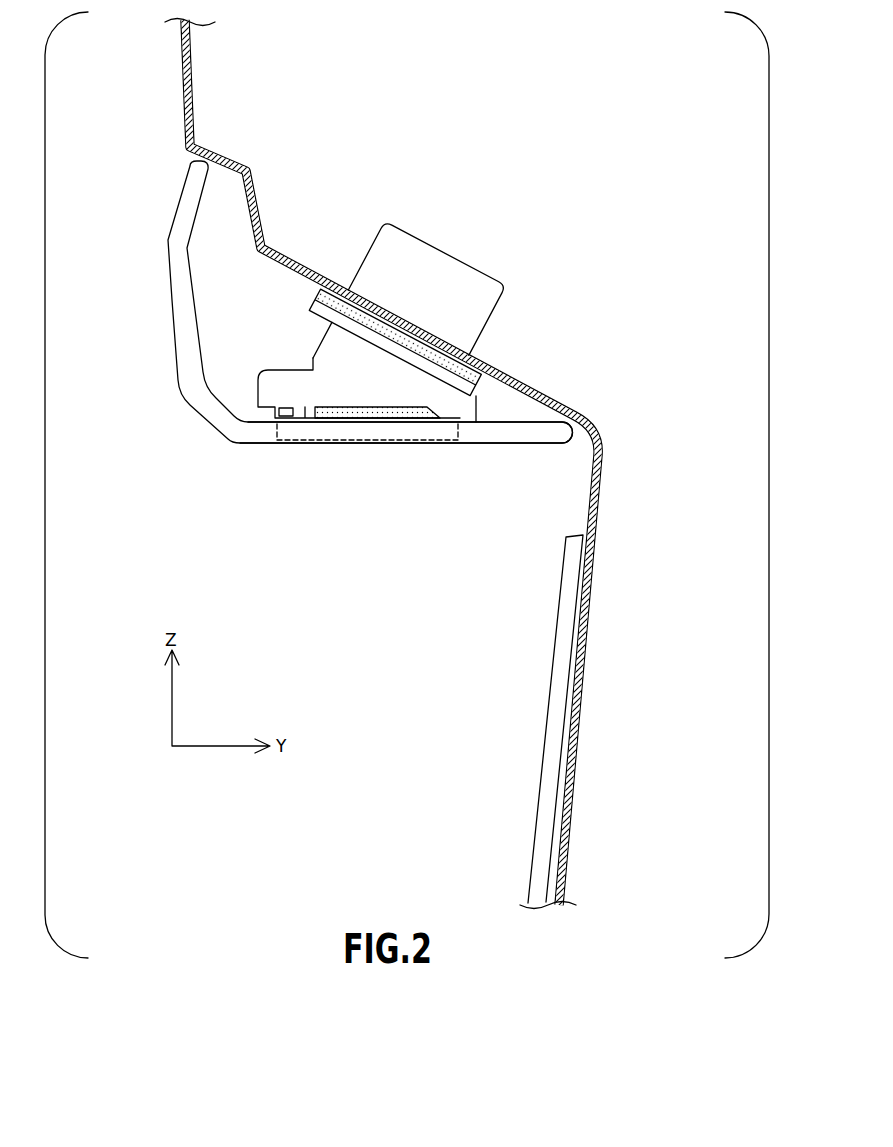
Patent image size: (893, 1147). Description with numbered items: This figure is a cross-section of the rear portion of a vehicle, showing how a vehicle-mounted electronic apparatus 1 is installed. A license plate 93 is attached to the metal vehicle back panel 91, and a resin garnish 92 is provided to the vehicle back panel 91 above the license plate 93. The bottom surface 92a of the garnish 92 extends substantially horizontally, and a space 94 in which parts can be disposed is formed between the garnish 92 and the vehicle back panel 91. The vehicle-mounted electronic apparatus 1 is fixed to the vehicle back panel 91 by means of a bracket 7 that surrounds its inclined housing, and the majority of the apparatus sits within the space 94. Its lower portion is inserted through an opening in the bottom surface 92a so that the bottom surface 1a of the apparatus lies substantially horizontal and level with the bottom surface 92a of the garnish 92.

The vehicle-mounted electronic apparatus 1 is at (333, 345).
The bottom surface 1a is at (360, 444).
The bracket 7 is at (322, 295).
The vehicle back panel 91 is at (193, 77).
The garnish 92 is at (178, 329).
The bottom surface 92a is at (493, 444).
The license plate 93 is at (558, 685).
The space 94 is at (245, 302).